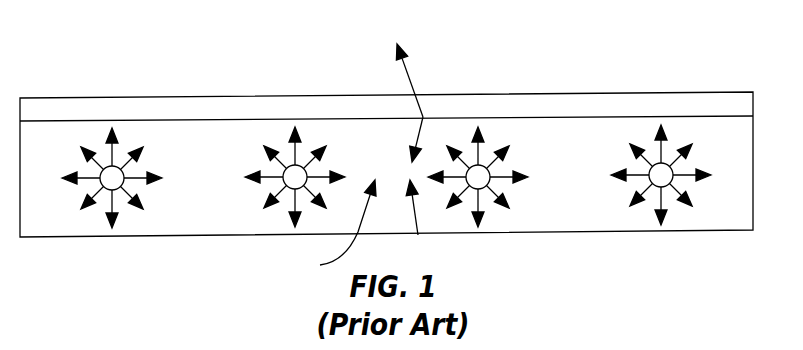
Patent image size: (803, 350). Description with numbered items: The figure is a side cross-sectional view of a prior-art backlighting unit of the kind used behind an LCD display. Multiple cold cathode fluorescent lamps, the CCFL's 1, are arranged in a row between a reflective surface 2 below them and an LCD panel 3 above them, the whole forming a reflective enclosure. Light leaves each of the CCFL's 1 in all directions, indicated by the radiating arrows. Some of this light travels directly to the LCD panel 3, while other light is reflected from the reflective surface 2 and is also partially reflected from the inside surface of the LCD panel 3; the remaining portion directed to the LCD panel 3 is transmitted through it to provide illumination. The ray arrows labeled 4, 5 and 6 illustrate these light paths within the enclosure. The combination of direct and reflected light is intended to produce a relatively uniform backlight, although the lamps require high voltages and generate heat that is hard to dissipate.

The cold cathode fluorescent lamp 1 is at (655, 164).
The reflective surface 2 is at (237, 237).
The LCD panel 3 is at (387, 108).
The light ray 4 is at (320, 265).
The reflected light 5 is at (423, 117).
The emitted light 6 is at (407, 72).